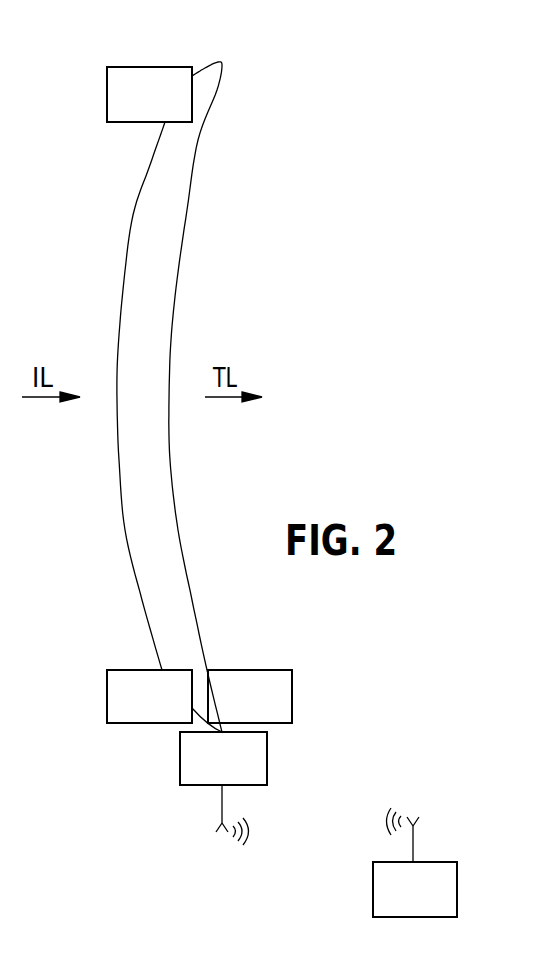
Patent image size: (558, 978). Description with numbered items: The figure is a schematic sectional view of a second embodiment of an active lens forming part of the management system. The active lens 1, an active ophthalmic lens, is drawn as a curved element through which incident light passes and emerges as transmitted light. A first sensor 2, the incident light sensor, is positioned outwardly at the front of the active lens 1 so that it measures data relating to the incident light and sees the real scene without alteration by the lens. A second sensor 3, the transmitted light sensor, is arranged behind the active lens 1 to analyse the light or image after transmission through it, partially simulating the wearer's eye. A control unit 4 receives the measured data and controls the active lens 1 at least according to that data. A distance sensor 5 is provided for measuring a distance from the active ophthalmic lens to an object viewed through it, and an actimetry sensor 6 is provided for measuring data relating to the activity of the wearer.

The active lens 1 is at (133, 215).
The first sensor 2 is at (124, 66).
The second sensor 3 is at (292, 710).
The control unit 4 is at (180, 774).
The distance sensor 5 is at (107, 710).
The actimetry sensor 6 is at (457, 876).